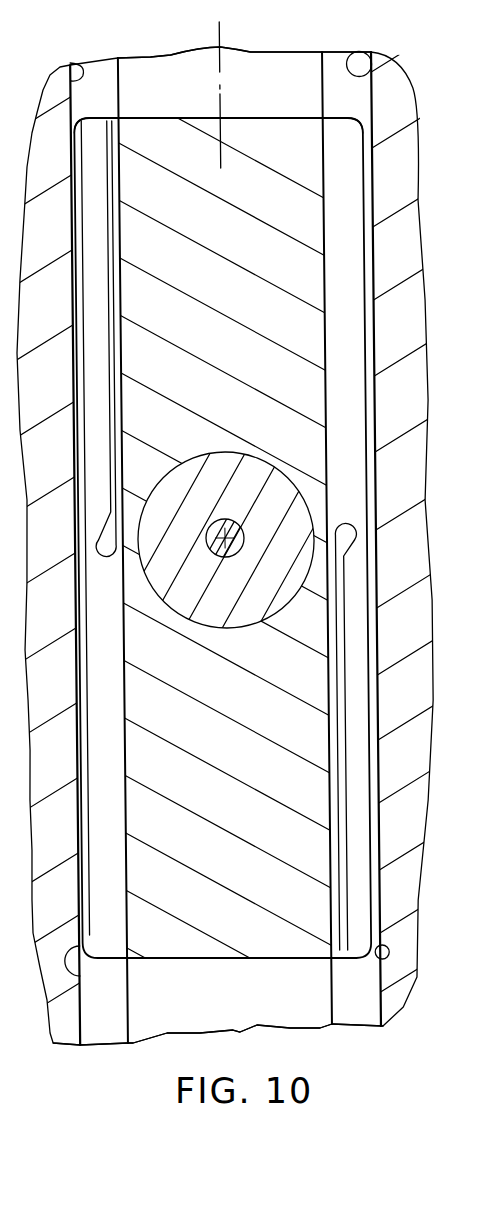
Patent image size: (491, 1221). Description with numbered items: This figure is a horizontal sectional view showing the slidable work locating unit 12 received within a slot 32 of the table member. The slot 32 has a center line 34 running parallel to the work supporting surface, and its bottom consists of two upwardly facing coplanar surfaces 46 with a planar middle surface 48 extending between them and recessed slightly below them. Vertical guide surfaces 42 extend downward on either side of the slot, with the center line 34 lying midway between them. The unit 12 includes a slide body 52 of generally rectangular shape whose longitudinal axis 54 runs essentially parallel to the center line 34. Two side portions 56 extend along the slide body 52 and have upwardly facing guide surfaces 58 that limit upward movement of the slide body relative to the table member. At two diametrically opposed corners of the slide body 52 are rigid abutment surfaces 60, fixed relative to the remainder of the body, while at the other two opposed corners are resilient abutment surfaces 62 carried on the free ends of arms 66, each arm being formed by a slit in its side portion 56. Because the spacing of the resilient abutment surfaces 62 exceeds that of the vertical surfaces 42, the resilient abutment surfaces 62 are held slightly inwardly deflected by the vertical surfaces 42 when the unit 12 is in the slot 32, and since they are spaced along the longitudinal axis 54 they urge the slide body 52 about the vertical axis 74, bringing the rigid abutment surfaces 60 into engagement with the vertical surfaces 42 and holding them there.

The work locating unit 12 is at (265, 133).
The slot 32 is at (300, 57).
The center line 34 is at (218, 34).
The vertical guide surface 42 is at (76, 76).
The upwardly facing surface 46 is at (99, 1026).
The middle surface 48 is at (166, 1012).
The slide body 52 is at (262, 944).
The longitudinal axis 54 is at (220, 63).
The side portion 56 is at (347, 295).
The upwardly facing guide surface 58 is at (352, 208).
The rigid abutment surface 60 is at (371, 131).
The resilient abutment surface 62 is at (72, 127).
The arm 66 is at (95, 287).
The vertical axis 74 is at (220, 524).